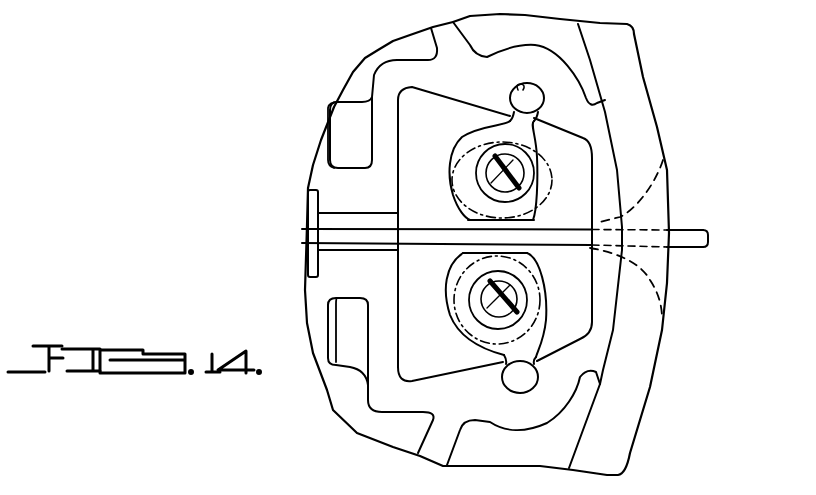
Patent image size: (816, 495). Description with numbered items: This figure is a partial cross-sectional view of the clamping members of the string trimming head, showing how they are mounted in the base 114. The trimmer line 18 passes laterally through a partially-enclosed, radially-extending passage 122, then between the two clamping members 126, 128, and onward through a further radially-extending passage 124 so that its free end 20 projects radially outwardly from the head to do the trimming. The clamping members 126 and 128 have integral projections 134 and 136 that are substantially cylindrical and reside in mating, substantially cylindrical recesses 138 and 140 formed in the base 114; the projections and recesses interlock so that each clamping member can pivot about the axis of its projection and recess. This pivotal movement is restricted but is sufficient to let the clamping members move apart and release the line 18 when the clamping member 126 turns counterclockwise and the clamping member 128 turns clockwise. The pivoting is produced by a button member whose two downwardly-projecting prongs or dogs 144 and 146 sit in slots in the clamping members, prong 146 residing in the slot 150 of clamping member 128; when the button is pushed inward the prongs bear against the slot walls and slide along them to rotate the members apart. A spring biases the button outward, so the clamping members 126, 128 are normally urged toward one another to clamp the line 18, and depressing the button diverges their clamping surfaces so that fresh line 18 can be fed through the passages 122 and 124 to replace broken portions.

The base 114 is at (649, 66).
The line 18 is at (315, 233).
The free end 20 is at (698, 231).
The radially-extending passage 122 is at (312, 251).
The further radially-extending passage 124 is at (648, 275).
The clamping member 126 is at (461, 290).
The clamping member 128 is at (545, 222).
The integral projection 134 is at (540, 365).
The integral projection 136 is at (533, 110).
The cylindrical recess 138 is at (514, 391).
The cylindrical recess 140 is at (519, 84).
The prong or dog 144 is at (506, 302).
The prong or dog 146 is at (522, 180).
The slot 150 is at (496, 155).